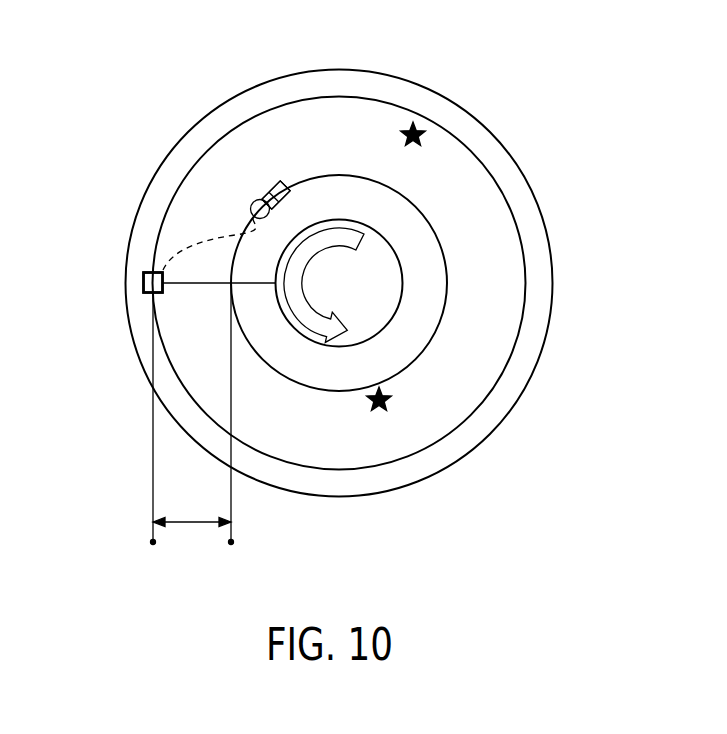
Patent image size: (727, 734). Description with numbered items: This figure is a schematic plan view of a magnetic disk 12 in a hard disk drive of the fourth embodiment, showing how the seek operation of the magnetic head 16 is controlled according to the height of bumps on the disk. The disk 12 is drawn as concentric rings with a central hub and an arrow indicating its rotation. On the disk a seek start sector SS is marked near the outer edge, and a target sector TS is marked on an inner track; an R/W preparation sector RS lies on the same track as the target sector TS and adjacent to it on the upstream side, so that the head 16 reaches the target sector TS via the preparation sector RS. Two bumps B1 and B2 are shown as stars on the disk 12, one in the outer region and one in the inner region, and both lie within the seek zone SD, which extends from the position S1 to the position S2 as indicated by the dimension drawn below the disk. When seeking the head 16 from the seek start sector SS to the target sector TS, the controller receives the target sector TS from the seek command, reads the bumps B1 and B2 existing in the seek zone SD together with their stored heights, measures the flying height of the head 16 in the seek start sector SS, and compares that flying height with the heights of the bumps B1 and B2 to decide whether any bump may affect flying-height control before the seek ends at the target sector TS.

The disk 12 is at (483, 138).
The magnetic head 16 is at (278, 187).
The target sector TS is at (266, 192).
The R/W preparation sector RS is at (252, 204).
The seek start sector SS is at (144, 283).
The bump B1 is at (400, 136).
The bump B2 is at (375, 413).
The seek zone start S1 is at (153, 545).
The seek zone end S2 is at (231, 545).
The seek zone SD is at (190, 526).